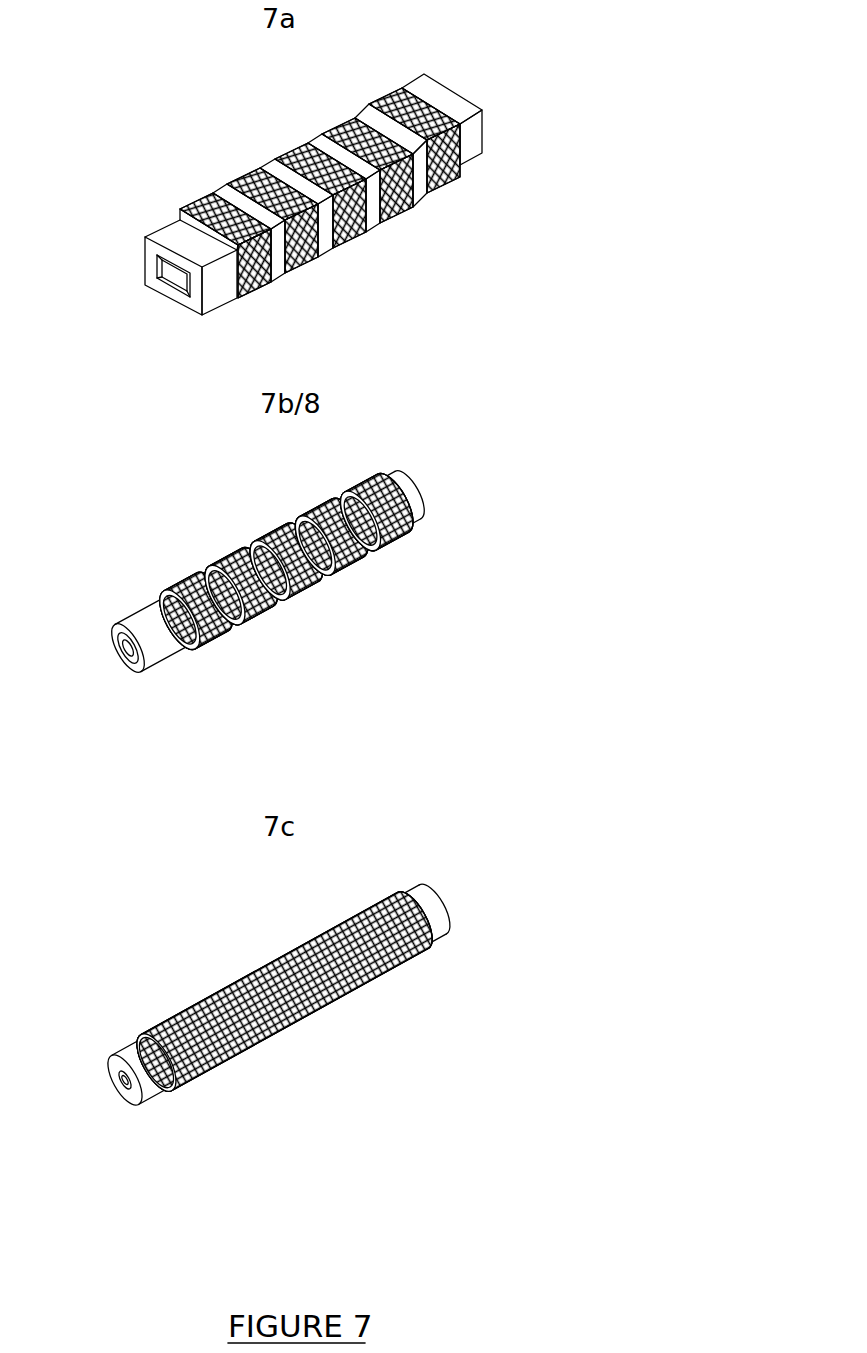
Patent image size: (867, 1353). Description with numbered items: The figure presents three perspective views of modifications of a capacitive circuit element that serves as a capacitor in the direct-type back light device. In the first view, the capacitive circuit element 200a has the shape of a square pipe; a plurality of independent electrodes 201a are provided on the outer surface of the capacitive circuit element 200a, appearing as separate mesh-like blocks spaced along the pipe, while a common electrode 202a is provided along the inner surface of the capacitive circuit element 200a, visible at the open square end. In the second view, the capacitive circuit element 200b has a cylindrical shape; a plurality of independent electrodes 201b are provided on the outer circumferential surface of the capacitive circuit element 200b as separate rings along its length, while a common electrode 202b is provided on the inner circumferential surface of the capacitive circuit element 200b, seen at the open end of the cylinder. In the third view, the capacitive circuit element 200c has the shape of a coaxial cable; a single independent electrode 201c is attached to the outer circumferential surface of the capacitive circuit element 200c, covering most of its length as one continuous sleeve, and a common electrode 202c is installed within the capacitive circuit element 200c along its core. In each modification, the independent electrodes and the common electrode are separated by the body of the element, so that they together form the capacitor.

In FIG. 7a, the capacitive circuit element 200a is at (292, 206).
In FIG. 7a, the independent electrodes 201a is at (268, 287).
In FIG. 7a, the common electrode 202a is at (146, 258).
In FIG. 7b, the capacitive circuit element 200b is at (299, 615).
In FIG. 7b, the independent electrodes 201b is at (212, 636).
In FIG. 7b, the common electrode 202b is at (134, 665).
In FIG. 7c, the capacitive circuit element 200c is at (293, 1039).
In FIG. 7c, the independent electrode 201c is at (233, 1058).
In FIG. 7c, the common electrode 202c is at (126, 1092).